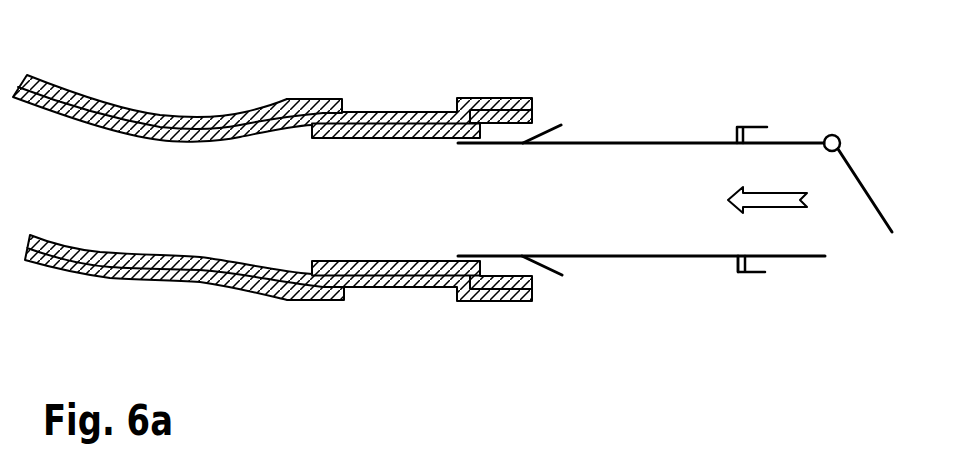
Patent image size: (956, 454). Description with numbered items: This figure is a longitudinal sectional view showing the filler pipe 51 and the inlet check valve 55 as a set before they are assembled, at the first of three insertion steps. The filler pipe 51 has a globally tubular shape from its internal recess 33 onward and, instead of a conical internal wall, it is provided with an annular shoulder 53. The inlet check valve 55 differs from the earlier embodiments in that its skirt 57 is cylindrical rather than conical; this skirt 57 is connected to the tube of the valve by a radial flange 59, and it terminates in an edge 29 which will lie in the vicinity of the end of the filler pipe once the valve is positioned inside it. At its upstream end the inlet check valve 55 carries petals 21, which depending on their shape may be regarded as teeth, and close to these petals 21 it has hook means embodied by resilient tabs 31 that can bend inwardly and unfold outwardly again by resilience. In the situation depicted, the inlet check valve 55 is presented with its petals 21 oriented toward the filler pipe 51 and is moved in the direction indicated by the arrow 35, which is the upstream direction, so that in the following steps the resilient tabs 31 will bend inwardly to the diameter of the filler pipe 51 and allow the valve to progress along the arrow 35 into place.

The petals 21 is at (500, 258).
The edge 29 is at (765, 272).
The resilient tabs 31 is at (541, 272).
The internal recess 33 is at (272, 140).
The arrow 35 is at (768, 200).
The filler pipe 51 is at (362, 84).
The annular shoulder 53 is at (487, 97).
The inlet check valve 55 is at (628, 118).
The skirt 57 is at (752, 272).
The radial flange 59 is at (737, 262).